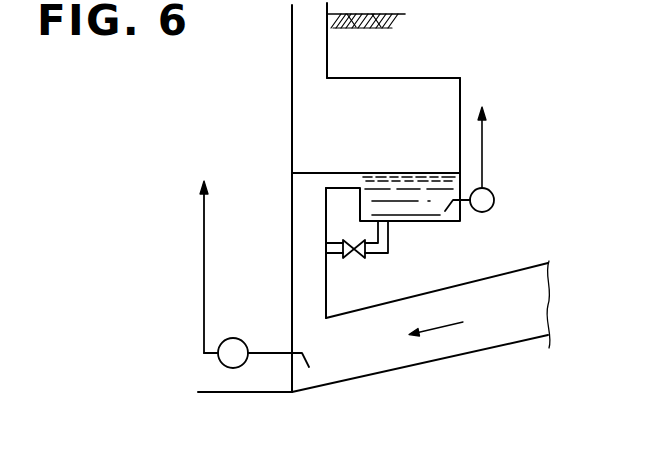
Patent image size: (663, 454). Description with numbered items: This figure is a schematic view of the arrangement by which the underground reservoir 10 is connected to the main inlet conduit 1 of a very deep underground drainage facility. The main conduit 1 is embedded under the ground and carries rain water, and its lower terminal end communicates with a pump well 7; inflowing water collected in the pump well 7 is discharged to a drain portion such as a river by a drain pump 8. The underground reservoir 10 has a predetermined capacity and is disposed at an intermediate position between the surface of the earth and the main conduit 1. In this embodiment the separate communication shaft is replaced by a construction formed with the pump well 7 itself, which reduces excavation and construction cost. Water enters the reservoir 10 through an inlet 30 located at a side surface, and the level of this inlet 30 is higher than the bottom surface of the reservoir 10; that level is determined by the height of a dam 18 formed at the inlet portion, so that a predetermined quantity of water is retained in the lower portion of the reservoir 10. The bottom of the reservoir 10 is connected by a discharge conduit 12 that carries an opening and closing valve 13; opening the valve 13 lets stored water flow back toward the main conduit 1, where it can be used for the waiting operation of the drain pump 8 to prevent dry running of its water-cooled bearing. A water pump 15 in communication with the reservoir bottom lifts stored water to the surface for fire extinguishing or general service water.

The main inlet conduit 1 is at (485, 338).
The pump well 7 is at (298, 257).
The drain pump 8 is at (244, 343).
The underground reservoir 10 is at (423, 95).
The discharge conduit 12 is at (386, 248).
The opening and closing valve 13 is at (362, 253).
The water pump 15 is at (495, 199).
The dam 18 is at (338, 204).
The inlet 30 is at (342, 128).